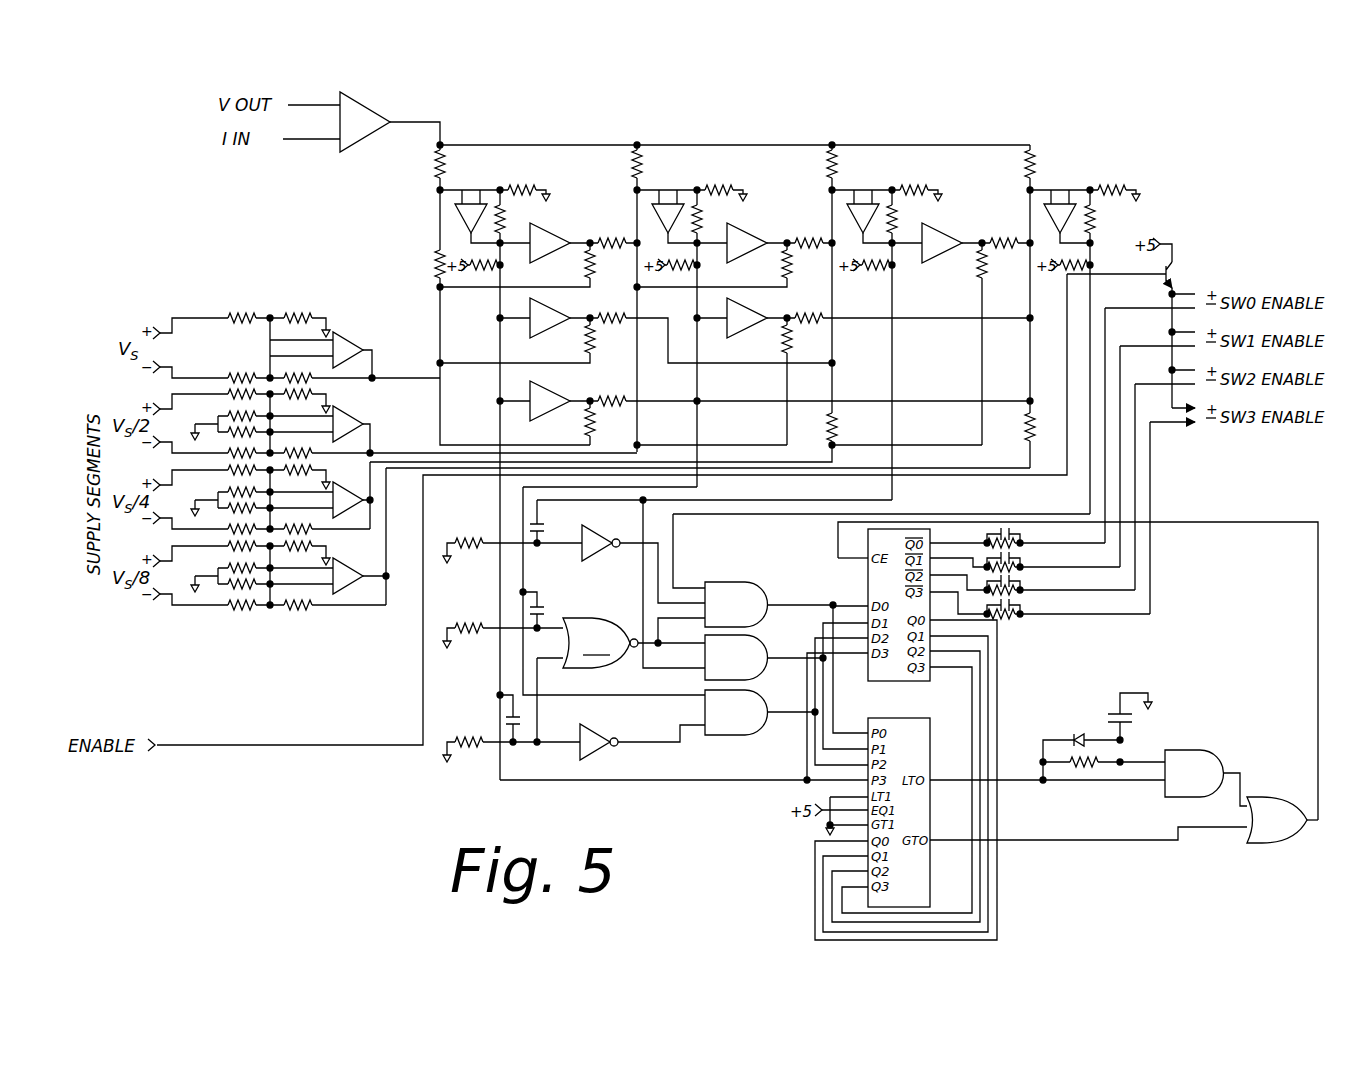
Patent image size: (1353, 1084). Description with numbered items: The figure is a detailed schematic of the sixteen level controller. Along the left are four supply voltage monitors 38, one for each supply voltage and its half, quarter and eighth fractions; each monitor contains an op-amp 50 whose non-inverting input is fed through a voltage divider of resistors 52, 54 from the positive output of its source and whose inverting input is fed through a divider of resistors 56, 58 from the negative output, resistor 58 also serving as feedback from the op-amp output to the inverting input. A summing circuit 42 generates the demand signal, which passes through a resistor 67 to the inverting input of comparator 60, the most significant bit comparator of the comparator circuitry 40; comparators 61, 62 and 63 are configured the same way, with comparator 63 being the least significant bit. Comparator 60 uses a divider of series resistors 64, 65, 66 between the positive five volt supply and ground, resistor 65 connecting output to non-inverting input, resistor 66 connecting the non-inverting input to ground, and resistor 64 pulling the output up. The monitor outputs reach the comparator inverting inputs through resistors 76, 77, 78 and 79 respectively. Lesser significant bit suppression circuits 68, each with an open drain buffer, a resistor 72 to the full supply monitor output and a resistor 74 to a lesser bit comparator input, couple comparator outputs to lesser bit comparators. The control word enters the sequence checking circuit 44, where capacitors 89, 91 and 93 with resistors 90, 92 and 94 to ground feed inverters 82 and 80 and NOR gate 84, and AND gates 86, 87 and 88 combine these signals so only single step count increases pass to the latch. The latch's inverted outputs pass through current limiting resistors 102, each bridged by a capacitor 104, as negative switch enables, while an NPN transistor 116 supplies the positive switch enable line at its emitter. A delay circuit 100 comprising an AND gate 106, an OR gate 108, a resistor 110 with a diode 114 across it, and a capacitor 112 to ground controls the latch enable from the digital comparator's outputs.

The summing circuit 42 is at (374, 109).
The comparator circuitry 40 is at (857, 133).
The resistor 67 is at (436, 165).
The comparator 60 is at (468, 200).
The comparator 61 is at (665, 200).
The comparator 62 is at (862, 200).
The comparator 63 is at (1060, 200).
The resistor 66 is at (520, 190).
The resistor 65 is at (511, 218).
The lesser significant bit suppression circuit 68 is at (556, 228).
The resistor 74 is at (612, 228).
The resistor 72 is at (586, 262).
The resistor 77 is at (640, 268).
The resistor 76 is at (436, 262).
The resistor 64 is at (480, 275).
The resistor 78 is at (830, 420).
The resistor 79 is at (1027, 428).
The resistor 52 is at (242, 312).
The resistor 54 is at (300, 312).
The resistor 56 is at (242, 372).
The resistor 58 is at (297, 372).
The supply voltage monitor 38 is at (352, 336).
The op-amp 50 is at (368, 478).
The NPN transistor 116 is at (1176, 274).
The resistor 94 is at (472, 540).
The capacitor 93 is at (541, 526).
The inverter 80 is at (590, 555).
The resistor 92 is at (472, 626).
The capacitor 91 is at (541, 610).
The NOR gate 84 is at (592, 641).
The capacitor 89 is at (500, 706).
The resistor 90 is at (472, 740).
The inverter 82 is at (598, 728).
The AND gate 86 is at (727, 603).
The AND gate 87 is at (727, 656).
The AND gate 88 is at (727, 711).
The sequence checking circuit 44 is at (487, 774).
The current limiting resistor 102 is at (988, 545).
The capacitor 104 is at (1015, 532).
The resistor 110 is at (1088, 770).
The diode 114 is at (1076, 732).
The capacitor 112 is at (1112, 712).
The delay circuit 100 is at (1233, 772).
The AND gate 106 is at (1186, 772).
The OR gate 108 is at (1269, 818).